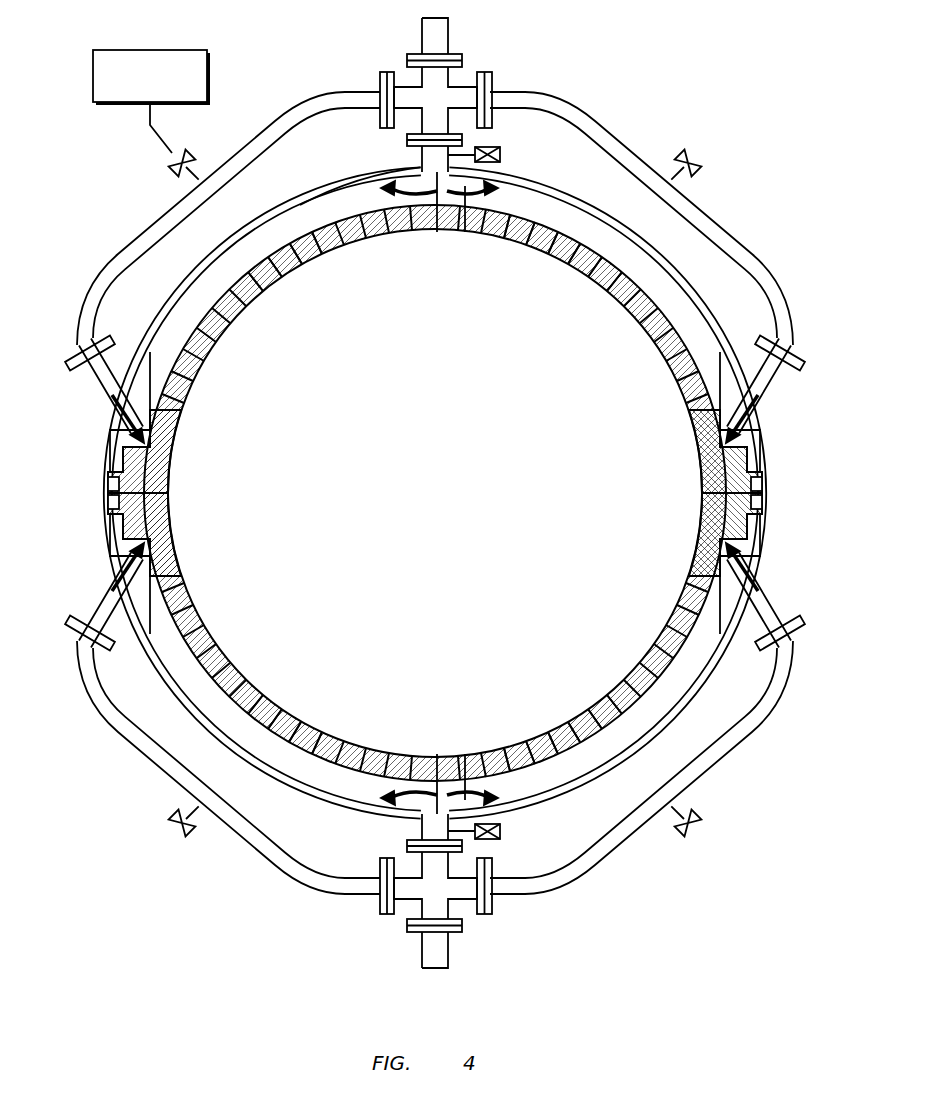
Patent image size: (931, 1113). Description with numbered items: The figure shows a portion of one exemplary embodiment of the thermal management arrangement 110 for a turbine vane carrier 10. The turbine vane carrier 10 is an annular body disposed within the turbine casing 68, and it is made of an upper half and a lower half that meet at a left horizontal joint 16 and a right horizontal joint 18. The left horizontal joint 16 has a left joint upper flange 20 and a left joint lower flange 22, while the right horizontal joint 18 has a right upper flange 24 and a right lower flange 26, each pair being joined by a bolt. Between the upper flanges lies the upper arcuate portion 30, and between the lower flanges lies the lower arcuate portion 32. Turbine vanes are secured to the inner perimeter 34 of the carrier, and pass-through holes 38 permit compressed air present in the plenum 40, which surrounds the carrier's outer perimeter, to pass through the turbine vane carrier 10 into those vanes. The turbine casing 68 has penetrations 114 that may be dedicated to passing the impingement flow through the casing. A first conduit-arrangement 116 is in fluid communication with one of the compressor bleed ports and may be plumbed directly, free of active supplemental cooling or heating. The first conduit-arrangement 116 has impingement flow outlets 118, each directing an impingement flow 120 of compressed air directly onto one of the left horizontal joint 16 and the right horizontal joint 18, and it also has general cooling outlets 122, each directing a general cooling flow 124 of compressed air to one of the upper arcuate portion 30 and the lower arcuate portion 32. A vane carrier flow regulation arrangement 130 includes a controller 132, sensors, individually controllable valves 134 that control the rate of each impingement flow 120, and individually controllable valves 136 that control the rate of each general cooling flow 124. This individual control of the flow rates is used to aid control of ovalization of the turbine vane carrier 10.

The turbine vane carrier 10 is at (545, 258).
The left horizontal joint 16 is at (182, 493).
The right horizontal joint 18 is at (683, 493).
The left joint upper flange 20 is at (172, 474).
The left joint lower flange 22 is at (175, 520).
The right upper flange 24 is at (698, 474).
The right lower flange 26 is at (692, 499).
The upper arcuate portion 30 is at (597, 292).
The lower arcuate portion 32 is at (596, 700).
The inner perimeter 34 is at (268, 290).
The pass-through holes 38 is at (640, 322).
The plenum 40 is at (338, 205).
The turbine casing 68 is at (382, 182).
The thermal management arrangement 110 is at (658, 124).
The penetrations 114 is at (105, 398).
The first conduit-arrangement 116 is at (450, 40).
The impingement flow outlets 118 is at (562, 112).
The impingement flow 120 is at (152, 432).
The general cooling outlets 122 is at (437, 238).
The general cooling flow 124 is at (465, 240).
The vane carrier flow regulation arrangement 130 is at (123, 129).
The controller 132 is at (152, 50).
The individually controllable valves 134 is at (168, 172).
The individually controllable valves 136 is at (502, 155).